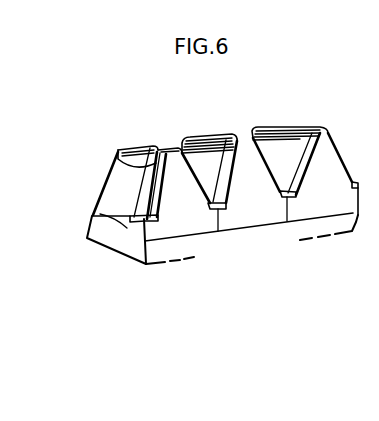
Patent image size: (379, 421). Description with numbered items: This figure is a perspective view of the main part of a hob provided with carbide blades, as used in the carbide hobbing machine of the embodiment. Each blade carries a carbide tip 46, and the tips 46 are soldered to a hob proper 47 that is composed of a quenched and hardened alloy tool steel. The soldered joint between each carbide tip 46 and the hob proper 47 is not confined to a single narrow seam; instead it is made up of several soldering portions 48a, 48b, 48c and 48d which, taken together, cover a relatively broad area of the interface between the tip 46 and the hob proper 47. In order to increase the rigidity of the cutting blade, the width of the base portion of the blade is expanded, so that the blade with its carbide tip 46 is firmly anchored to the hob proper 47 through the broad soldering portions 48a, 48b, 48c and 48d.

The carbide tip 46 is at (210, 193).
The hob proper 47 is at (110, 240).
The soldering portion 48a is at (120, 157).
The soldering portion 48b is at (99, 200).
The soldering portion 48c is at (129, 222).
The soldering portion 48d is at (220, 220).